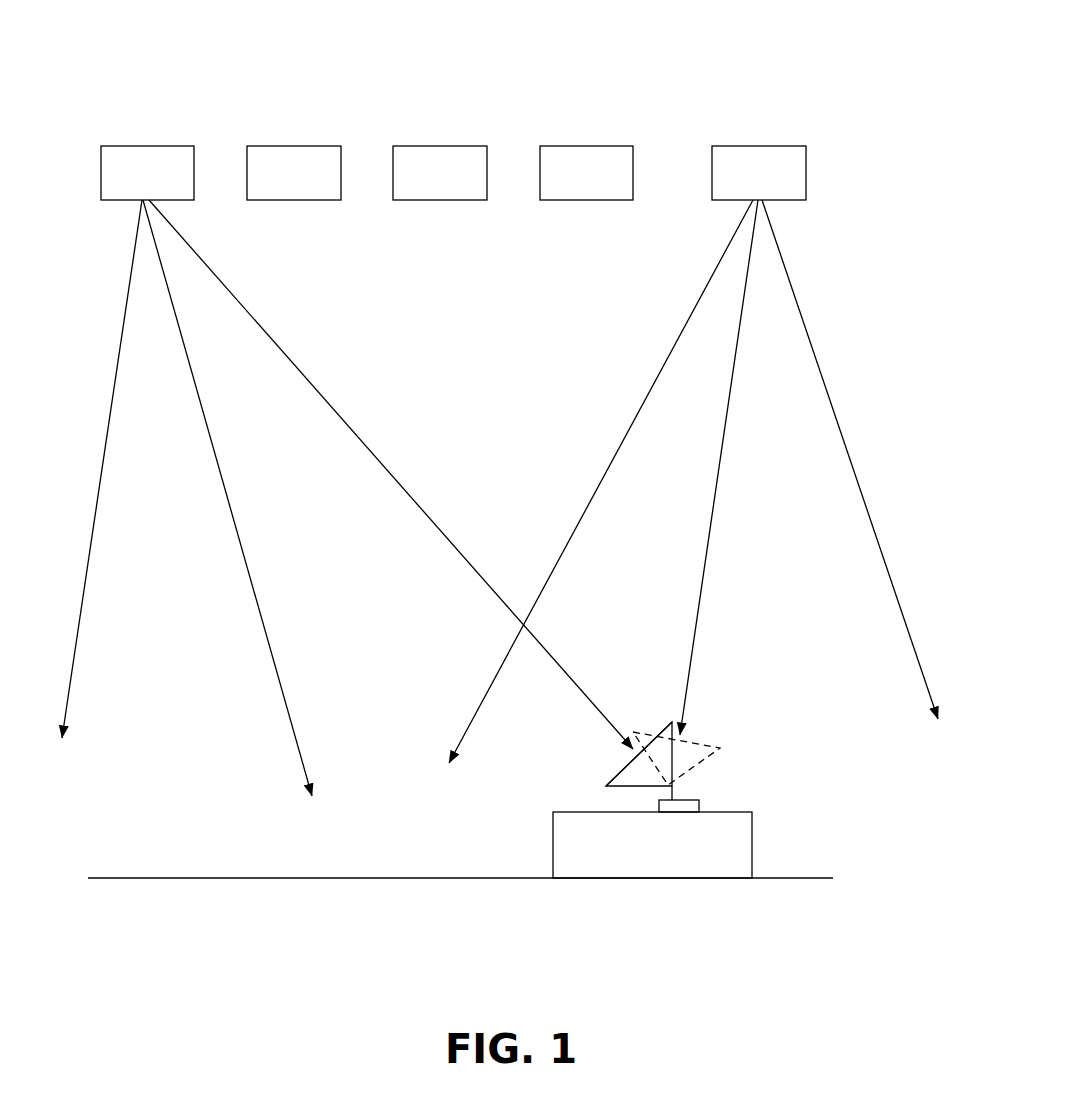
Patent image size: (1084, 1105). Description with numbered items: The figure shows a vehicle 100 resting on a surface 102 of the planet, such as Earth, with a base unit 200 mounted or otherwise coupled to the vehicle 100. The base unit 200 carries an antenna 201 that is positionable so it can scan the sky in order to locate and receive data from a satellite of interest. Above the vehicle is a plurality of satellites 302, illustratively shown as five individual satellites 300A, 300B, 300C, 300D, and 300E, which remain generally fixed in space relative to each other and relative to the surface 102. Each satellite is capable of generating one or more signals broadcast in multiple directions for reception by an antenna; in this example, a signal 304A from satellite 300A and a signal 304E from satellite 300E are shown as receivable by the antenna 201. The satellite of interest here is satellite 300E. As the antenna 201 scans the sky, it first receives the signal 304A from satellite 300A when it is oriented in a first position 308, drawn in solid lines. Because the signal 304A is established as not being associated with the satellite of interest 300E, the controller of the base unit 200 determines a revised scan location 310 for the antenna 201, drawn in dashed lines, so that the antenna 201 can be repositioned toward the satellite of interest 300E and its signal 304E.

The plurality of satellites 302 is at (529, 90).
The satellite 300A is at (122, 187).
The satellite 300B is at (268, 187).
The satellite 300C is at (414, 187).
The satellite 300D is at (561, 187).
The satellite of interest 300E is at (734, 187).
The signal 304A is at (342, 405).
The signal 304E is at (834, 365).
The antenna 201 is at (657, 715).
The first position 308 is at (617, 766).
The revised scan location 310 is at (715, 742).
The base unit 200 is at (703, 791).
The vehicle 100 is at (633, 874).
The surface 102 is at (807, 872).